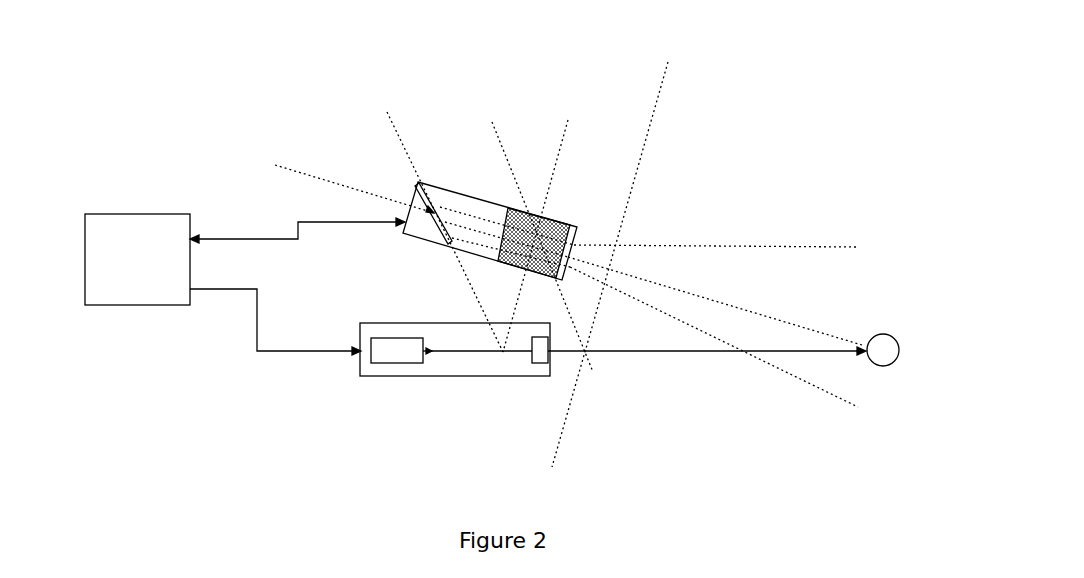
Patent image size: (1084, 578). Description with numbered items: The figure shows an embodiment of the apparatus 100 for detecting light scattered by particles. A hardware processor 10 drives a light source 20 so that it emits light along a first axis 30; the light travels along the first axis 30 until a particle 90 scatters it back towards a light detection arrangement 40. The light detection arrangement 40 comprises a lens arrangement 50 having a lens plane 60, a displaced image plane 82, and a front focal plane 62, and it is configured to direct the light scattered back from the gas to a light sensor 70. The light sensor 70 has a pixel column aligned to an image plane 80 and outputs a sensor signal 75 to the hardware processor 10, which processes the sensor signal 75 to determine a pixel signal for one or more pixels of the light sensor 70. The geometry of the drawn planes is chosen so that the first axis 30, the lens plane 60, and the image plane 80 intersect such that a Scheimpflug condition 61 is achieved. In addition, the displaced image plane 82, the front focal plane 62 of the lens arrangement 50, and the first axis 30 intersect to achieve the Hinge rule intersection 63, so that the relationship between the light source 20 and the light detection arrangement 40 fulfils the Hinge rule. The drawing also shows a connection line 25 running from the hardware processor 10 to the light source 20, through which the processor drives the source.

The apparatus 100 is at (210, 113).
The hardware processor 10 is at (137, 259).
The sensor signal 75 is at (222, 235).
The drive signal line 25 is at (258, 352).
The light source 20 is at (405, 376).
The Scheimpflug condition 61 is at (503, 353).
The first axis 30 is at (665, 352).
The particle 90 is at (883, 334).
The light detection arrangement 40 is at (470, 197).
The lens arrangement 50 is at (552, 222).
The light sensor 70 is at (432, 197).
The image plane 80 is at (395, 133).
The displaced image plane 82 is at (480, 142).
The lens plane 60 is at (560, 158).
The front focal plane 62 is at (650, 130).
The Hinge rule intersection 63 is at (583, 353).